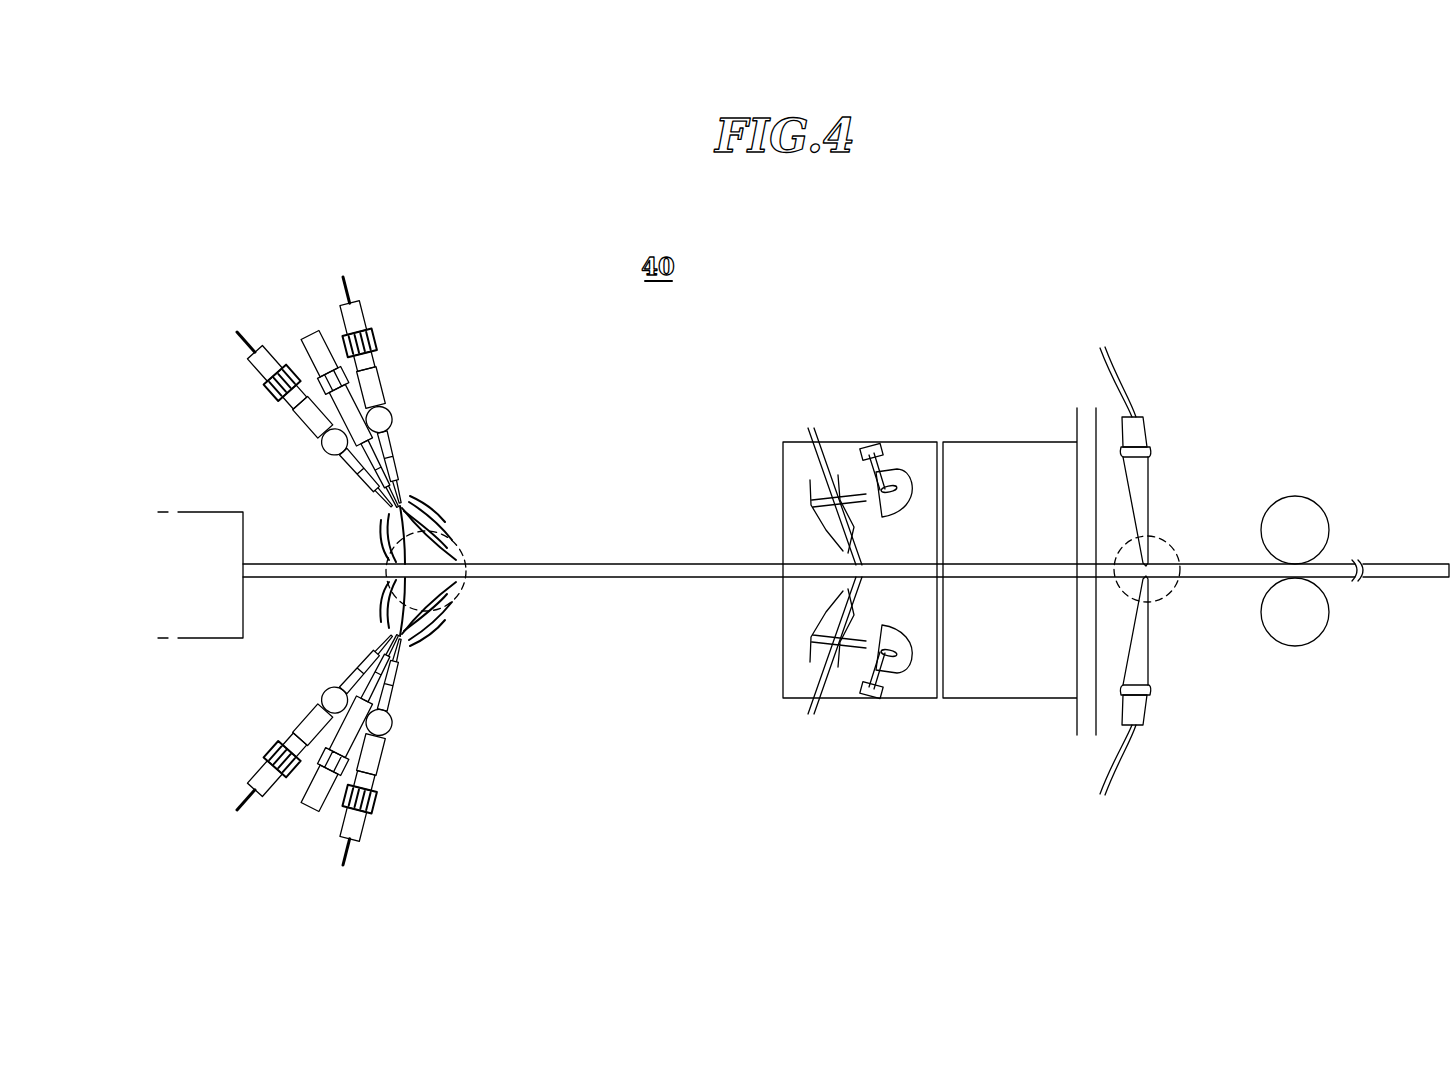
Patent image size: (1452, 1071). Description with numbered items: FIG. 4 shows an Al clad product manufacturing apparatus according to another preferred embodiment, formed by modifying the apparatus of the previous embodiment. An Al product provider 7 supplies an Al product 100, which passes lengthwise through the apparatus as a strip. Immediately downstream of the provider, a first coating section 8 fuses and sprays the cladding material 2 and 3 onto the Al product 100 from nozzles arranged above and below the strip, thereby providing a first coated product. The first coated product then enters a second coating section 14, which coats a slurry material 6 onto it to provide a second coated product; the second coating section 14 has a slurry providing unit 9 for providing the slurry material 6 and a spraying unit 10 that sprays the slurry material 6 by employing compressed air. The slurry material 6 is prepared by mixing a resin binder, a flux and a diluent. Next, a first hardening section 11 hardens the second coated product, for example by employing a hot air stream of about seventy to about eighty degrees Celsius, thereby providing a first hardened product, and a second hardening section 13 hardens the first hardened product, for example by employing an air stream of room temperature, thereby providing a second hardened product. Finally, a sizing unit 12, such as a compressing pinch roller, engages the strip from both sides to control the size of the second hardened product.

The cladding material 2 is at (352, 290).
The cladding material 3 is at (245, 343).
The slurry material 6 is at (903, 480).
The Al product provider 7 is at (205, 640).
The first coating section 8 is at (460, 540).
The slurry providing unit 9 is at (870, 477).
The spraying unit 10 is at (813, 500).
The first hardening section 11 is at (1005, 447).
The sizing unit 12 is at (1293, 512).
The second hardening section 13 is at (1172, 547).
The second coating section 14 is at (782, 455).
The Al product 100 is at (602, 564).